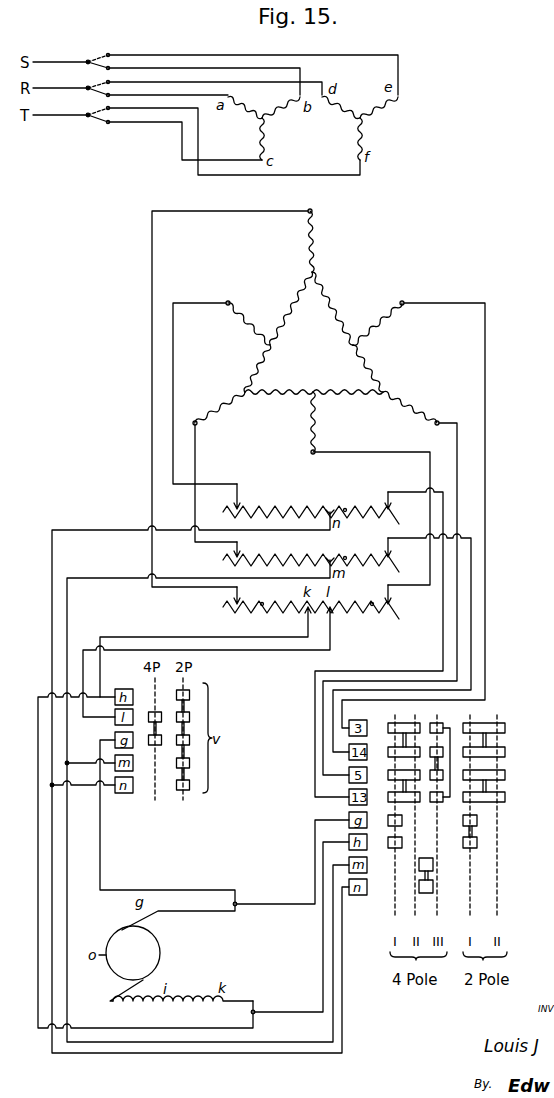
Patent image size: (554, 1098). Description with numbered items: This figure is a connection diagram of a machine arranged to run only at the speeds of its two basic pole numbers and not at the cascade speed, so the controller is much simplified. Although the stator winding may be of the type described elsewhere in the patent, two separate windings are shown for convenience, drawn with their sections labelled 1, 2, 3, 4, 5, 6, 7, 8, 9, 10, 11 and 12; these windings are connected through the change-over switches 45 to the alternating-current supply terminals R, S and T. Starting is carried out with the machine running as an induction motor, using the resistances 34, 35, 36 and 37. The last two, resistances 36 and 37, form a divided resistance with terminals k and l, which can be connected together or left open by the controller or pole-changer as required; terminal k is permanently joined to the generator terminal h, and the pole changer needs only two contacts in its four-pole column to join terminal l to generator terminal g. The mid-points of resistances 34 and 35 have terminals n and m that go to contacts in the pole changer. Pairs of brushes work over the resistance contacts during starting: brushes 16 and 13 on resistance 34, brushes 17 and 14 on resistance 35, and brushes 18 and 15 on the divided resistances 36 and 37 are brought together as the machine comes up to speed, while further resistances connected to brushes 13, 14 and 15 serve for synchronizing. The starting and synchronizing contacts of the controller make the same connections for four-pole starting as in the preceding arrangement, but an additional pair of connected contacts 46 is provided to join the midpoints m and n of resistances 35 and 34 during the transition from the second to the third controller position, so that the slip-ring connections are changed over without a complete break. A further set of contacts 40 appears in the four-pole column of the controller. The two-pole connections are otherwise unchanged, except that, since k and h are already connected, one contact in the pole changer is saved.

The stator winding section 1 is at (311, 235).
The stator winding section 2 is at (332, 308).
The stator winding section terminal 3 is at (380, 315).
The stator winding section 4 is at (368, 369).
The stator winding section terminal 5 is at (413, 416).
The stator winding section 6 is at (348, 402).
The stator winding section terminal 7 is at (319, 432).
The stator winding section 8 is at (279, 402).
The stator winding section terminal 9 is at (216, 407).
The stator winding section 10 is at (257, 368).
The stator winding section terminal 11 is at (245, 315).
The stator winding section 12 is at (291, 308).
The brush 13 is at (380, 497).
The brush 14 is at (380, 546).
The brush 15 is at (382, 593).
The brush 16 is at (246, 496).
The brush 17 is at (246, 547).
The brush 18 is at (246, 594).
The resistance 34 is at (347, 509).
The resistance 35 is at (347, 557).
The divided resistance 36 is at (262, 604).
The divided resistance 37 is at (372, 604).
The relay contacts 40 is at (389, 841).
The change-over switches 45 is at (94, 71).
The pair of connected contacts 46 is at (430, 886).